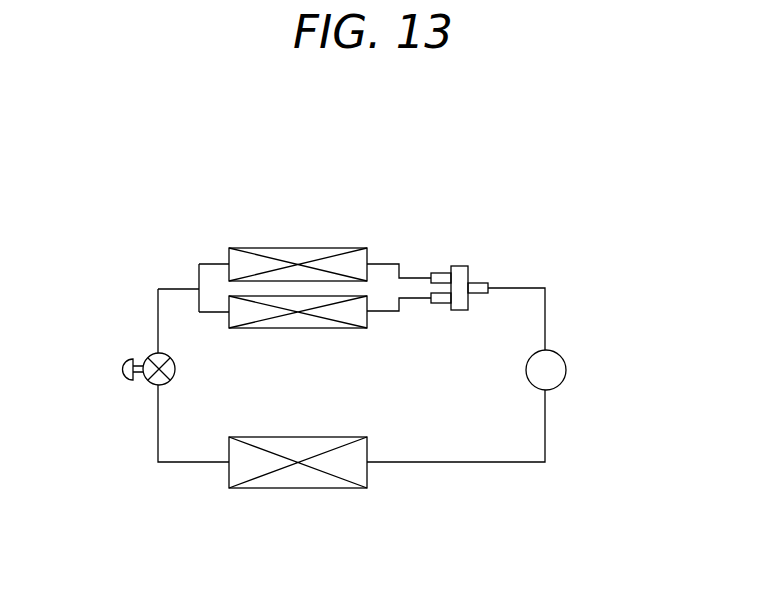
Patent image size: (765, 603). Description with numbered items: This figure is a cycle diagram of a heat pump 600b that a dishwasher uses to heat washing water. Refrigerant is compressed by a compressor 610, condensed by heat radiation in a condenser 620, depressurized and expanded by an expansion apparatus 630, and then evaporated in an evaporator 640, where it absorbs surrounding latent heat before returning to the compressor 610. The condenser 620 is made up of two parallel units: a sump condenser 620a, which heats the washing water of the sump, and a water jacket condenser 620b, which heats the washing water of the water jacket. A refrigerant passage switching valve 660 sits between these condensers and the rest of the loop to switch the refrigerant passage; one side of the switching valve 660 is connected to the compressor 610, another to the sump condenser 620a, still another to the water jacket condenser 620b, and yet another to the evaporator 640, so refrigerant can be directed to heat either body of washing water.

The heat pump 600b is at (543, 255).
The compressor 610 is at (560, 355).
The condenser 620 is at (297, 230).
The sump condenser 620a is at (312, 302).
The water jacket condenser 620b is at (262, 251).
The expansion apparatus 630 is at (150, 356).
The evaporator 640 is at (309, 480).
The refrigerant passage switching valve 660 is at (457, 266).